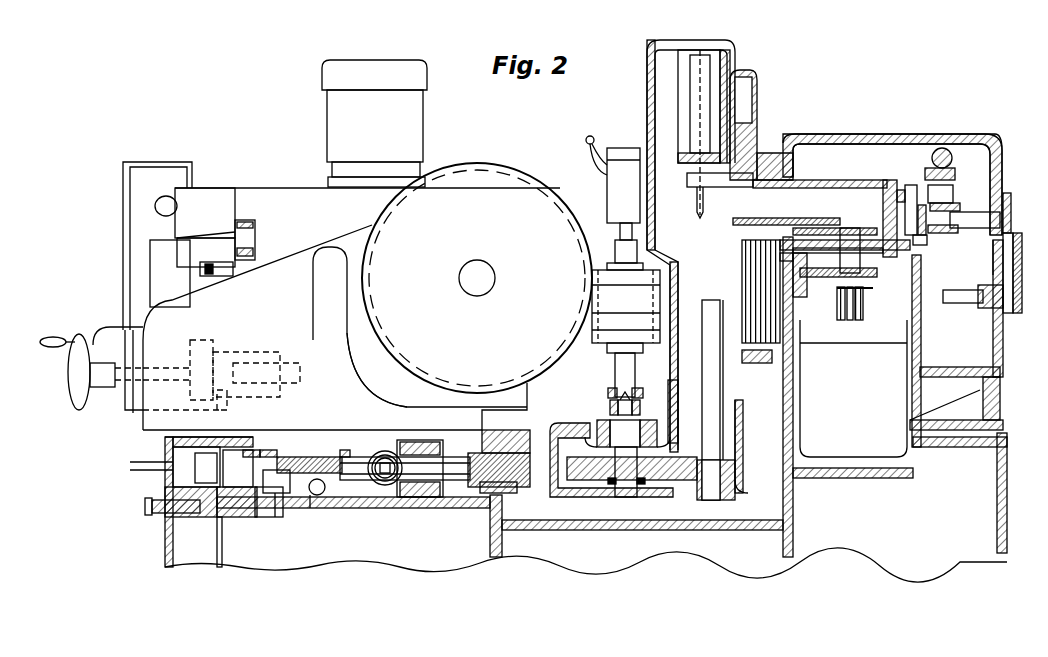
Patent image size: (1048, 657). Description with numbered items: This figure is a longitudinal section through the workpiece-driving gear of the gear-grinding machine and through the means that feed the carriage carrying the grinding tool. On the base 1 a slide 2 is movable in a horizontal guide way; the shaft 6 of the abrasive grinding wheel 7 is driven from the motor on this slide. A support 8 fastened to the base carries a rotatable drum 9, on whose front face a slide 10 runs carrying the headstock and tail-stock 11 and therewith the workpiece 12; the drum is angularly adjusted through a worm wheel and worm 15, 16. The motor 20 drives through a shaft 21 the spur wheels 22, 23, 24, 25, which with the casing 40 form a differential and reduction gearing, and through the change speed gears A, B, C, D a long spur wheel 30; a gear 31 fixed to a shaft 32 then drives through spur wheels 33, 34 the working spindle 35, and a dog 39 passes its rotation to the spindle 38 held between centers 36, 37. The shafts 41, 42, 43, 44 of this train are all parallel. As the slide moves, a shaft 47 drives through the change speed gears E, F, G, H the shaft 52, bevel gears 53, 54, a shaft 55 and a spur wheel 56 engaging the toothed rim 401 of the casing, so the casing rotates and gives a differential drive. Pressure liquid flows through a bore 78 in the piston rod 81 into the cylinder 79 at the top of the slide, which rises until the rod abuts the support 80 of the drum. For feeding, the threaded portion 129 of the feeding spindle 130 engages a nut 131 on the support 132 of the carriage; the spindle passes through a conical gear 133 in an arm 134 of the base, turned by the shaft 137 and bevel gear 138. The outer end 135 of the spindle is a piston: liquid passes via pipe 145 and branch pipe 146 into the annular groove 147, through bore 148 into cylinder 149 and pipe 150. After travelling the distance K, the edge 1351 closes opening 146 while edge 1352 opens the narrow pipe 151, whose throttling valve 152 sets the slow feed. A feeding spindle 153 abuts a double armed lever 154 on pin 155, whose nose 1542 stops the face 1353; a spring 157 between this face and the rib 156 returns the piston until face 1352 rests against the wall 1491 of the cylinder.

The base 1 is at (1003, 492).
The slide 2 is at (320, 277).
The shaft 6 is at (486, 278).
The abrasive grinding wheel 7 is at (430, 383).
The support 8 is at (853, 135).
The drum 9 is at (993, 372).
The slide 10 is at (647, 70).
The tail-stock 11 is at (622, 202).
The workpiece 12 is at (602, 340).
The worm wheel 15 is at (952, 158).
The worm 16 is at (955, 174).
The motor 20 is at (846, 359).
The shaft 21 is at (850, 320).
The spur wheel 22 is at (860, 320).
The spur wheel 23 is at (860, 288).
The spur wheel 24 is at (742, 270).
The spur wheel 25 is at (870, 272).
The long spur wheel 30 is at (742, 293).
The gear 31 is at (726, 345).
The shaft 32 is at (720, 381).
The spur wheel 33 is at (723, 465).
The spur wheel 34 is at (690, 463).
The working spindle 35 is at (600, 418).
The center 36 is at (612, 401).
The center 37 is at (628, 240).
The spindle 38 is at (630, 368).
The dog 39 is at (638, 392).
The casing 40 is at (915, 302).
The shaft 41 is at (742, 282).
The shaft 42 is at (851, 258).
The shaft 43 is at (805, 228).
The shaft 44 is at (764, 218).
The shaft 47 is at (972, 300).
The shaft 52 is at (973, 228).
The bevel gear 53 is at (955, 212).
The bevel gear 54 is at (912, 188).
The shaft 55 is at (922, 236).
The spur wheel 56 is at (925, 248).
The bore 78 is at (730, 117).
The cylinder 79 is at (707, 50).
The support 80 is at (728, 180).
The piston rod 81 is at (740, 98).
The screw threaded portion 129 is at (475, 490).
The feeding spindle 130 is at (360, 470).
The nut 131 is at (515, 482).
The support 132 is at (522, 442).
The conical gear 133 is at (440, 452).
The arm 134 is at (437, 500).
The outer end 135 is at (245, 468).
The shaft 137 is at (386, 485).
The bevel gear 138 is at (378, 482).
The pipe 145 is at (222, 552).
The branch pipe 146 is at (230, 505).
The annular groove 147 is at (262, 505).
The bore 148 is at (213, 462).
The cylinder 149 is at (182, 475).
The pipe 150 is at (148, 470).
The branch pipe 151 is at (160, 505).
The throttling valve 152 is at (148, 515).
The feeding spindle 153 is at (318, 496).
The double armed lever 154 is at (310, 508).
The pin 155 is at (275, 517).
The rib 156 is at (360, 449).
The spring 157 is at (320, 458).
The toothed rim 401 is at (800, 257).
The edge 1351 is at (265, 446).
The edge 1352 is at (190, 488).
The face 1353 is at (290, 446).
The wall 1491 is at (170, 456).
The nose 1542 is at (280, 493).
The change speed gear A is at (862, 228).
The change speed gear B is at (820, 228).
The change speed gear C is at (836, 228).
The change speed gear D is at (742, 218).
The change speed gear E is at (1016, 315).
The change speed gear F is at (1020, 247).
The change speed gear G is at (993, 270).
The change speed gear H is at (1008, 196).
The distance K is at (194, 437).